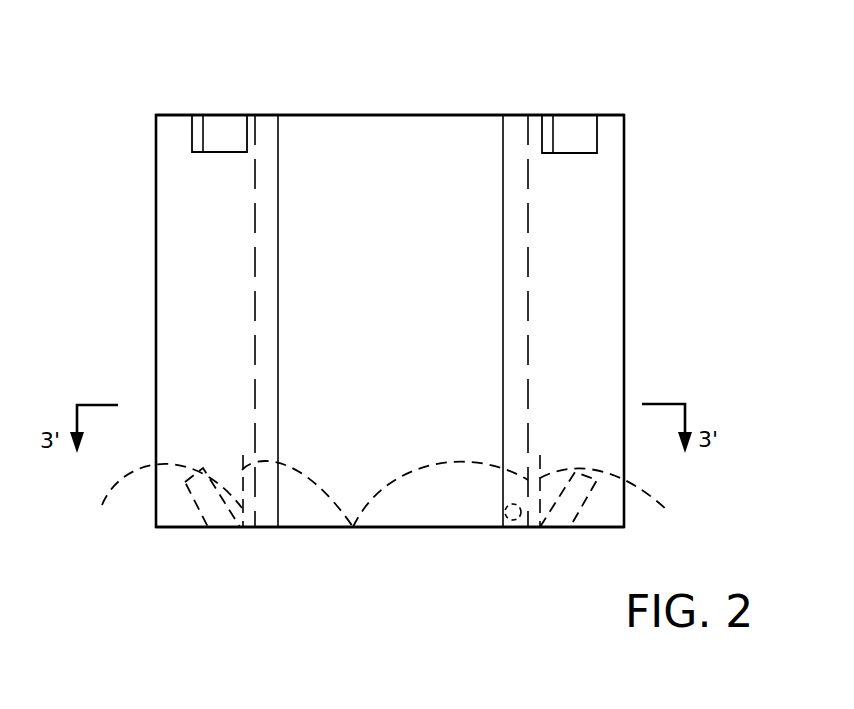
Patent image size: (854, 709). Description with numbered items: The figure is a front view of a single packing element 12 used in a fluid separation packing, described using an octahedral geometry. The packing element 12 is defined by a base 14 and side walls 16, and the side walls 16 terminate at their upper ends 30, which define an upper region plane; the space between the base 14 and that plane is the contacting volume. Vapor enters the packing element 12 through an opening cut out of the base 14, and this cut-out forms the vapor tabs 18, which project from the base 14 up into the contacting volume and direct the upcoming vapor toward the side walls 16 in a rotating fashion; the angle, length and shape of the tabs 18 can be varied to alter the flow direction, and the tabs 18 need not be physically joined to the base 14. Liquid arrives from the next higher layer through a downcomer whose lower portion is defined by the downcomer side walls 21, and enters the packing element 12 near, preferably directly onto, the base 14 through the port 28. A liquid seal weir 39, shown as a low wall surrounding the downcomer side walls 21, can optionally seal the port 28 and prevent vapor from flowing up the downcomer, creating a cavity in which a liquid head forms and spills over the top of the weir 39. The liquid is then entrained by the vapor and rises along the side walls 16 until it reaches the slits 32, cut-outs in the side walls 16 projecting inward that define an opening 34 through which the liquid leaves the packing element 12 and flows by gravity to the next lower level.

The packing element 12 is at (667, 318).
The base 14 is at (423, 528).
The side walls 16 is at (350, 285).
The vapor tabs 18 is at (381, 497).
The downcomer side walls 21 is at (253, 237).
The port 28 is at (513, 528).
The upper ends 30 is at (403, 115).
The slits 32 is at (228, 135).
The opening 34 is at (196, 137).
The liquid seal weir 39 is at (353, 529).